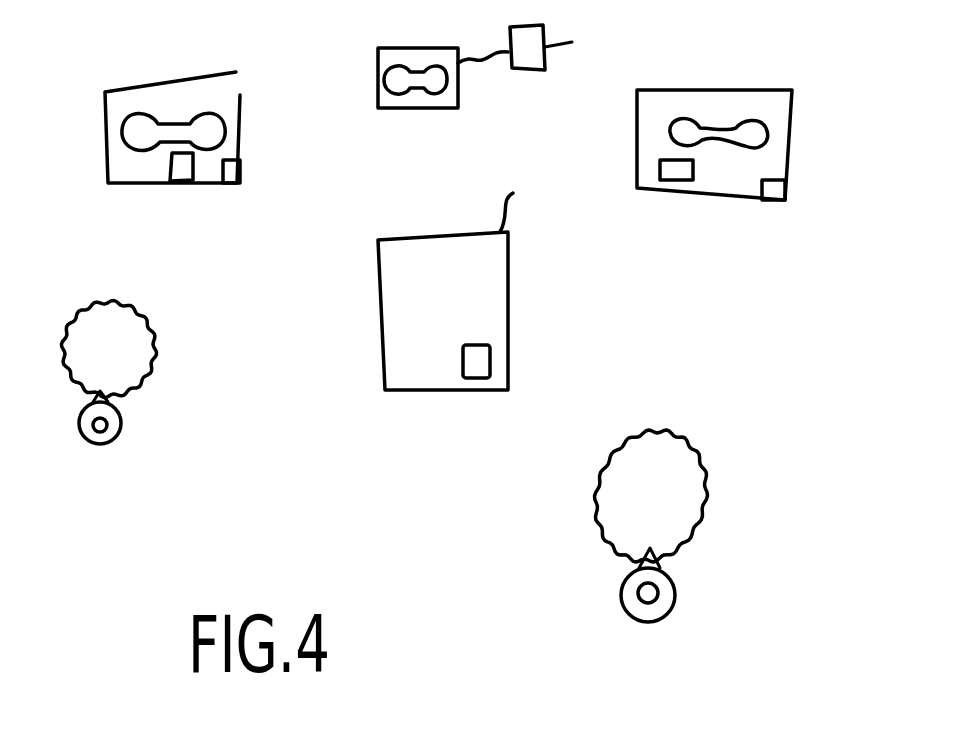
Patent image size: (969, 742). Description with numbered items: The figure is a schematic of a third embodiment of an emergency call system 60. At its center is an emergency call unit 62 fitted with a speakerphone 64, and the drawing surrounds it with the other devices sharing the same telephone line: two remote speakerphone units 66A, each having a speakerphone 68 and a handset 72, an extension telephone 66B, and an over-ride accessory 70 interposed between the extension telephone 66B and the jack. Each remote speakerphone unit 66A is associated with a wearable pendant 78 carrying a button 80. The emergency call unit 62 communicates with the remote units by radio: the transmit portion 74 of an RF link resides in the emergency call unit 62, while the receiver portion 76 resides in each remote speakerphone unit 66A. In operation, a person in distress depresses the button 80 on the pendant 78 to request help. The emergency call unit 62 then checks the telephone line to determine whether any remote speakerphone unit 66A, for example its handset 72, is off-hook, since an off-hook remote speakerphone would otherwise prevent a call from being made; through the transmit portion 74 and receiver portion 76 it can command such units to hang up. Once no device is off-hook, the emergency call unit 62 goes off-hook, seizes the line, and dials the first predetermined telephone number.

The emergency call system 60 is at (245, 425).
The emergency call unit 62 is at (430, 392).
The speakerphone 64 is at (478, 365).
The remote speakerphone unit 66A is at (213, 185).
The extension telephone 66B is at (410, 110).
The speakerphone 68 is at (190, 160).
The over-ride accessory 70 is at (523, 70).
The handset 72 is at (163, 127).
The transmit portion 74 is at (513, 197).
The receiver portion 76 is at (232, 170).
The pendant 78 is at (80, 436).
The button 80 is at (97, 437).